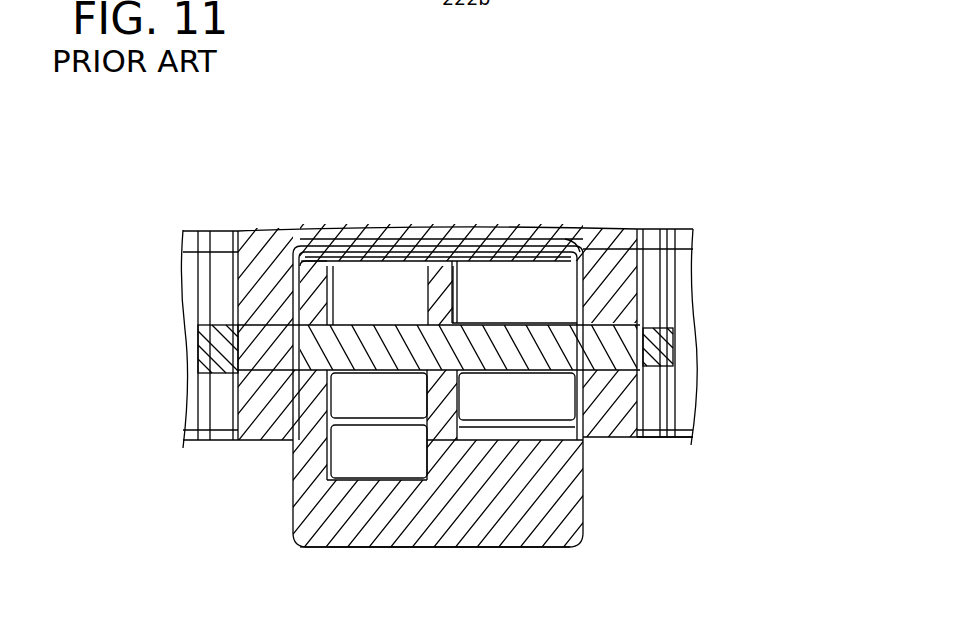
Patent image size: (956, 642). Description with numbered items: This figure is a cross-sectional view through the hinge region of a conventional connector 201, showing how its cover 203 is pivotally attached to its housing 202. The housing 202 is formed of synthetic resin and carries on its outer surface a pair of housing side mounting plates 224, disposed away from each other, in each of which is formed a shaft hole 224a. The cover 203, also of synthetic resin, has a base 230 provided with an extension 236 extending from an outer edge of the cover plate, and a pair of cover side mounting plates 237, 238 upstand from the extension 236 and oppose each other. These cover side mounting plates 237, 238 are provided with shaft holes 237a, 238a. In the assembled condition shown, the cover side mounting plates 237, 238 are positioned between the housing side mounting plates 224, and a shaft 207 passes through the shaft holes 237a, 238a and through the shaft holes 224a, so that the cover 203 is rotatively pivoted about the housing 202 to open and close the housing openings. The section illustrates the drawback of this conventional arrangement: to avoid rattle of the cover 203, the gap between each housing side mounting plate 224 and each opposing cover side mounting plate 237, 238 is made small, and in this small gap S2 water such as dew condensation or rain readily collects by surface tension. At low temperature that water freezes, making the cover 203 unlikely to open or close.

The connector 201 is at (594, 121).
The housing 202 is at (658, 444).
The cover 203 is at (582, 478).
The shaft 207 is at (652, 332).
The housing side mounting plates 224 is at (188, 250).
The shaft hole 224a is at (237, 358).
The base 230 is at (583, 504).
The extension 236 is at (419, 533).
The cover side mounting plate 237 is at (533, 252).
The shaft hole 237a is at (392, 320).
The cover side mounting plate 238 is at (292, 247).
The shaft hole 238a is at (348, 318).
The gap S2 is at (313, 532).